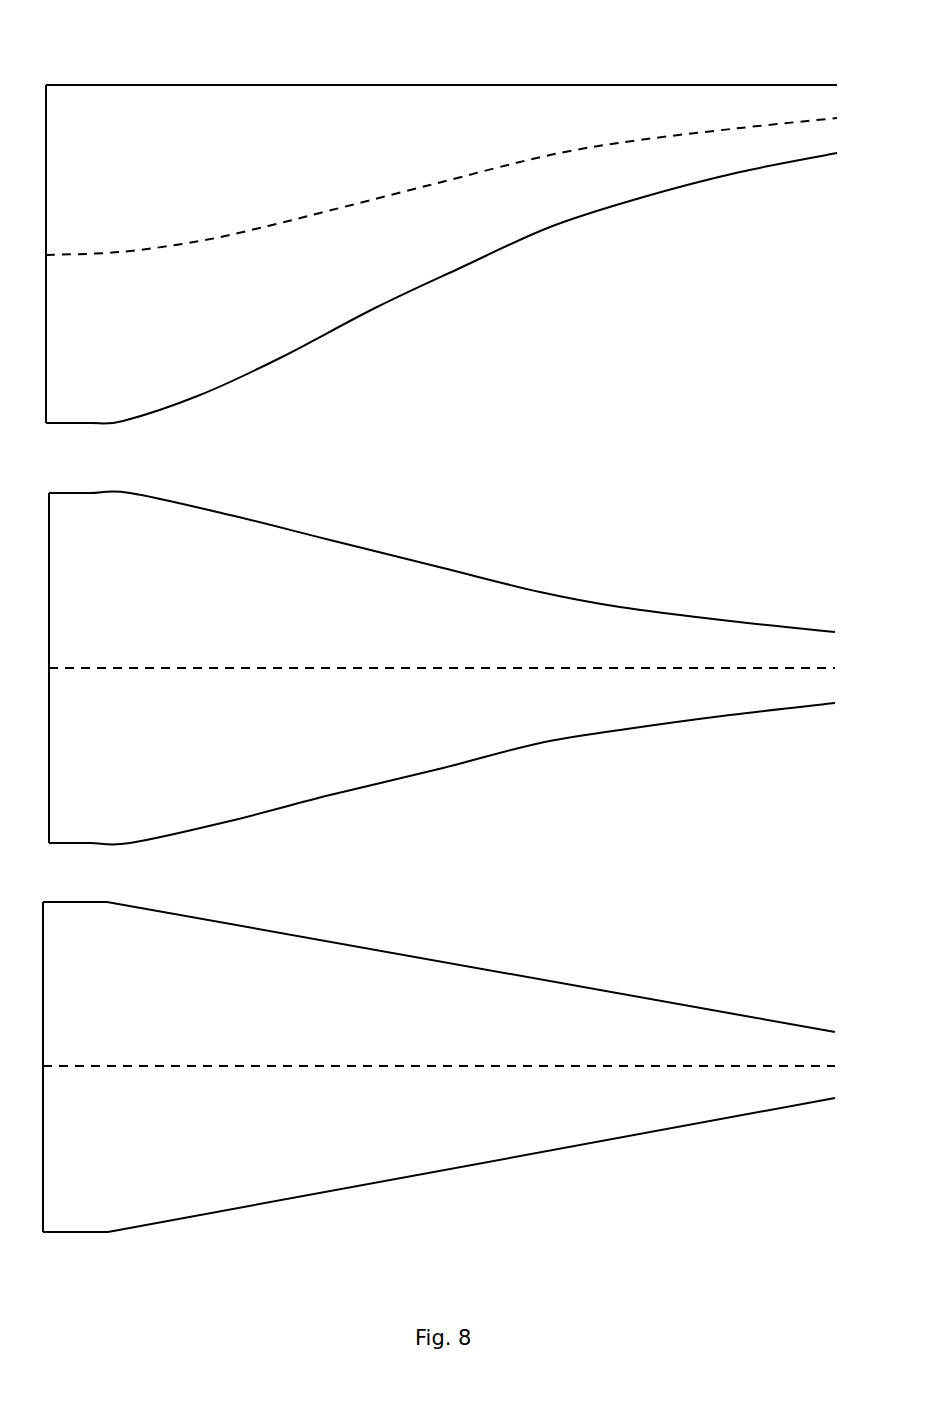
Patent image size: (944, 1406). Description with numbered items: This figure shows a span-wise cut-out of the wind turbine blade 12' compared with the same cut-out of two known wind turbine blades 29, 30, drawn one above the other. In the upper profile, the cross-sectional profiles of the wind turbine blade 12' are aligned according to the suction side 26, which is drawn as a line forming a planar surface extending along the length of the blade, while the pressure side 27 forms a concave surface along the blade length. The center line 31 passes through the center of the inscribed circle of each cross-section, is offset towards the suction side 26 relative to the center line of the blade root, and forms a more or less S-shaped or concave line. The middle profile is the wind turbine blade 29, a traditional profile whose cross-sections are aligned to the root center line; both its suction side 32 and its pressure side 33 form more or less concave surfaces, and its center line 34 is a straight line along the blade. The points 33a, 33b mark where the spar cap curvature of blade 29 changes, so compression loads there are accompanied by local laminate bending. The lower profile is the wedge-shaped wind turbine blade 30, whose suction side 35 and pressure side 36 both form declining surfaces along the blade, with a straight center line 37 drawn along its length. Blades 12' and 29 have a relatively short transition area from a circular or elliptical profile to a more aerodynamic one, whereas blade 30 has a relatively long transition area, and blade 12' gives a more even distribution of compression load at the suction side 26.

The wind turbine blade 12' is at (396, 254).
The suction side 26 is at (500, 85).
The pressure side 27 is at (375, 308).
The wind turbine blade 29 is at (618, 758).
The wind turbine blade 30 is at (612, 1158).
The center line 31 is at (268, 226).
The suction side 32 is at (443, 568).
The pressure side 33 is at (397, 777).
The point 33a is at (130, 508).
The point 33b is at (608, 616).
The center line 34 is at (218, 668).
The suction side 35 is at (435, 960).
The pressure side 36 is at (380, 1183).
The straight centre line 37 is at (198, 1066).